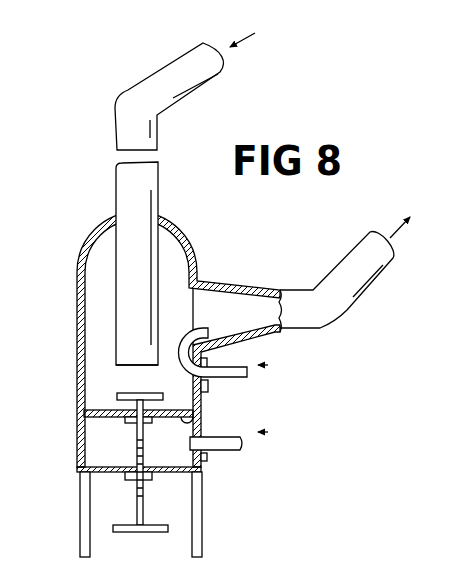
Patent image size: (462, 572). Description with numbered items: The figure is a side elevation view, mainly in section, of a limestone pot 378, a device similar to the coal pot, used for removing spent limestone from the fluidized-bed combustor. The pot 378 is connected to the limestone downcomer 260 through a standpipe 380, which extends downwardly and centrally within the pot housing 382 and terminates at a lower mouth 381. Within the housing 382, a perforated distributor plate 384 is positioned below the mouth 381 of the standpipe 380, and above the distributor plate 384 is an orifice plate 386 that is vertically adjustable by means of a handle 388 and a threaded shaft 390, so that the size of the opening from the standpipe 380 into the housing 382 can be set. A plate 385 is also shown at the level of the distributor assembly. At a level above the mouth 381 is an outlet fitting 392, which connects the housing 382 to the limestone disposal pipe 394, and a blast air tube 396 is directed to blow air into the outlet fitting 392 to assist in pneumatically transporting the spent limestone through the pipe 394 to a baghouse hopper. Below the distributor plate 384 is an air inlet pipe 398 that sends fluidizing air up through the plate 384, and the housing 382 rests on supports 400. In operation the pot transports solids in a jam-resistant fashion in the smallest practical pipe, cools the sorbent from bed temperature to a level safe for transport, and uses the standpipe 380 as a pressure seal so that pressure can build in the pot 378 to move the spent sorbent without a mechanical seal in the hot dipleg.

The limestone downcomer 260 is at (198, 97).
The limestone pot 378 is at (197, 331).
The standpipe 380 is at (95, 268).
The mouth 381 is at (133, 375).
The pot housing 382 is at (190, 240).
The perforated distributor plate 384 is at (125, 415).
The partition plate 385 is at (85, 414).
The orifice plate 386 is at (117, 395).
The handle 388 is at (138, 532).
The threaded shaft 390 is at (146, 487).
The outlet fitting 392 is at (223, 285).
The limestone disposal pipe 394 is at (345, 258).
The blast air tube 396 is at (248, 372).
The air inlet pipe 398 is at (229, 452).
The supports 400 is at (80, 533).